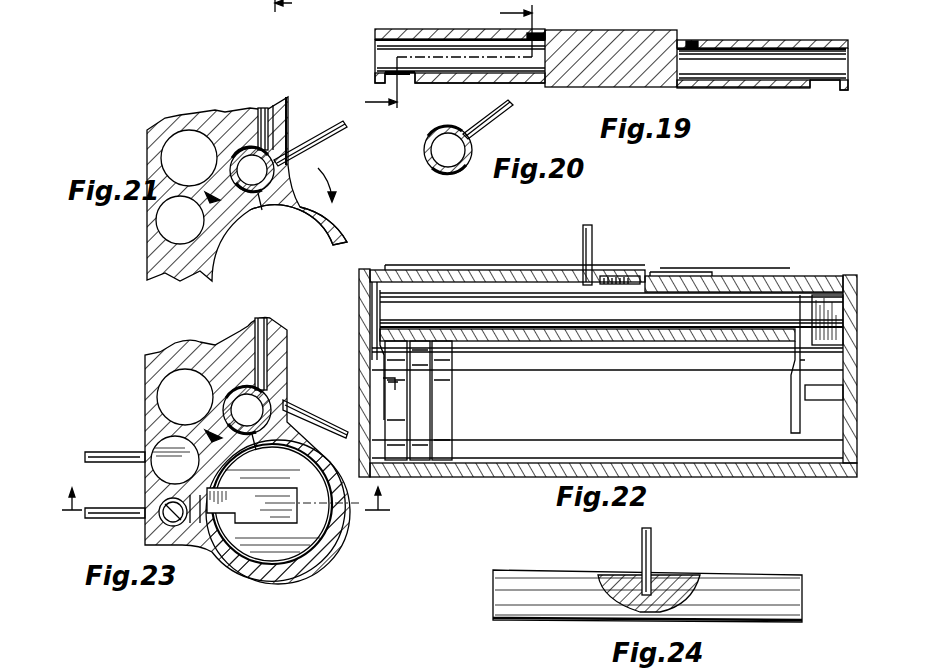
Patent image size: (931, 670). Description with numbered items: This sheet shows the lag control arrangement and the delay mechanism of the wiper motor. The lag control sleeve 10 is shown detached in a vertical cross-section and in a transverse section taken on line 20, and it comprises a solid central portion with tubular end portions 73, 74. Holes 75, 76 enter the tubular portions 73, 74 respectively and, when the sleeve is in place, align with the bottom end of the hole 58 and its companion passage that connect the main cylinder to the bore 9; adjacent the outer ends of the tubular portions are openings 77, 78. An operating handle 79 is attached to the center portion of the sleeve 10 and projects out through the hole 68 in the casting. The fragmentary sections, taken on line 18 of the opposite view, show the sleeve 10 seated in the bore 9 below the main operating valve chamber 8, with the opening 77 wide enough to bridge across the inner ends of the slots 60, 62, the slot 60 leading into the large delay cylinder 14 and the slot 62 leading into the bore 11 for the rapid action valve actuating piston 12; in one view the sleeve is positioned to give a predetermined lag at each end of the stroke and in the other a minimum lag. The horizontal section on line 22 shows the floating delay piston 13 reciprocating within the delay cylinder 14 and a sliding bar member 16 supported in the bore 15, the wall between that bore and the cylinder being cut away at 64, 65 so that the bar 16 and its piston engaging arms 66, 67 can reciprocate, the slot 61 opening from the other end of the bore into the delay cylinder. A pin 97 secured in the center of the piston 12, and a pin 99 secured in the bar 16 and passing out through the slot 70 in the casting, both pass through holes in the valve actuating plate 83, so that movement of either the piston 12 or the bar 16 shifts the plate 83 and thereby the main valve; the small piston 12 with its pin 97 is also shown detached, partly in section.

In FIG. 21, the main operating valve chamber 8 is at (176, 154).
In FIG. 23, the main operating valve chamber 8 is at (187, 374).
In FIG. 21, the bore 9 is at (215, 135).
In FIG. 23, the bore 9 is at (212, 340).
In FIG. 19, the lag control sleeve 10 is at (595, 72).
In FIG. 21, the lag control sleeve 10 is at (288, 180).
In FIG. 23, the lag control sleeve 10 is at (235, 462).
In FIG. 21, the bore 11 is at (168, 228).
In FIG. 23, the rapid action valve actuating piston 12 is at (160, 440).
In FIG. 24, the rapid action valve actuating piston 12 is at (752, 588).
In FIG. 23, the floating delay piston 13 is at (312, 548).
In FIG. 22, the floating delay piston 13 is at (430, 384).
In FIG. 19, the delay cylinder 14 is at (682, 6).
In FIG. 21, the delay cylinder 14 is at (342, 229).
In FIG. 23, the delay cylinder 14 is at (277, 583).
In FIG. 22, the delay cylinder 14 is at (680, 426).
In FIG. 19, the bore 15 is at (852, 6).
In FIG. 22, the bore 15 is at (495, 284).
In FIG. 23, the sliding bar member 16 is at (158, 528).
In FIG. 22, the sliding bar member 16 is at (690, 300).
In FIG. 19, the section line 18 is at (293, 12).
In FIG. 19, the section line 20 is at (450, 61).
In FIG. 23, the section line 22 is at (226, 489).
In FIG. 21, the hole 58 is at (280, 110).
In FIG. 23, the hole 58 is at (270, 332).
In FIG. 21, the slot 60 is at (262, 210).
In FIG. 23, the slot 60 is at (256, 450).
In FIG. 22, the slot 60 is at (826, 402).
In FIG. 22, the slot 61 is at (382, 373).
In FIG. 21, the slot 62 is at (218, 200).
In FIG. 23, the slot 62 is at (210, 432).
In FIG. 23, the cut-away portion 64 is at (210, 560).
In FIG. 22, the cut-away portion 64 is at (826, 346).
In FIG. 22, the cut-away portion 65 is at (370, 333).
In FIG. 23, the piston engaging arm 66 is at (262, 540).
In FIG. 22, the piston engaging arm 66 is at (791, 400).
In FIG. 22, the piston engaging arm 67 is at (372, 354).
In FIG. 21, the hole 68 is at (280, 186).
In FIG. 23, the hole 68 is at (280, 396).
In FIG. 22, the slot 70 is at (620, 275).
In FIG. 19, the tubular end portion 73 is at (440, 34).
In FIG. 20, the tubular end portion 73 is at (424, 155).
In FIG. 21, the tubular end portion 73 is at (245, 148).
In FIG. 23, the tubular end portion 73 is at (246, 386).
In FIG. 19, the tubular end portion 74 is at (740, 40).
In FIG. 19, the hole 75 is at (540, 38).
In FIG. 20, the hole 75 is at (430, 134).
In FIG. 21, the hole 75 is at (283, 142).
In FIG. 23, the hole 75 is at (280, 372).
In FIG. 19, the hole 76 is at (690, 40).
In FIG. 19, the opening 77 is at (404, 80).
In FIG. 20, the opening 77 is at (436, 170).
In FIG. 21, the opening 77 is at (232, 205).
In FIG. 23, the opening 77 is at (222, 410).
In FIG. 19, the opening 78 is at (828, 92).
In FIG. 20, the operating handle 79 is at (502, 108).
In FIG. 21, the operating handle 79 is at (334, 130).
In FIG. 23, the operating handle 79 is at (322, 426).
In FIG. 22, the valve actuating plate 83 is at (672, 270).
In FIG. 23, the pin 97 is at (118, 455).
In FIG. 24, the pin 97 is at (640, 545).
In FIG. 23, the pin 99 is at (114, 512).
In FIG. 22, the pin 99 is at (583, 246).